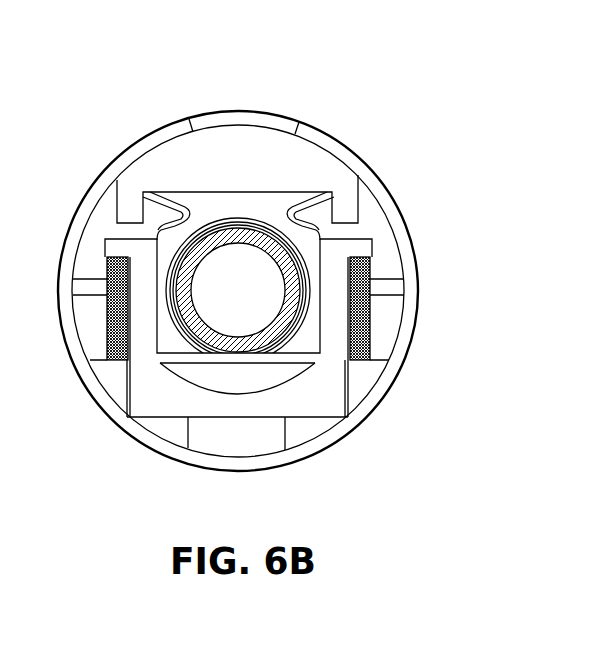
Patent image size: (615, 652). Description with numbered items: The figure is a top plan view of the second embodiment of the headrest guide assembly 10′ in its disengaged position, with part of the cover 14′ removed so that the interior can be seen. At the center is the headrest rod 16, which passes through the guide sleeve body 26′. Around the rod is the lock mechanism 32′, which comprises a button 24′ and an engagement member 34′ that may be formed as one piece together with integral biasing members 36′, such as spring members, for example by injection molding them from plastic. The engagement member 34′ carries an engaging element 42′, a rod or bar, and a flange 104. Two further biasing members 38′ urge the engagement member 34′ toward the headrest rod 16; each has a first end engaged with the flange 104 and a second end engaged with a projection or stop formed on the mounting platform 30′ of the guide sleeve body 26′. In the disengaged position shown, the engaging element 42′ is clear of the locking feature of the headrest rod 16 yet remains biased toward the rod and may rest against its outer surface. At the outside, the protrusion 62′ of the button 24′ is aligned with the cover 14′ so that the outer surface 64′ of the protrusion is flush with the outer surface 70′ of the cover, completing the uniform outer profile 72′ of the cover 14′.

The headrest guide assembly 10′ is at (354, 42).
The cover 14′ is at (88, 193).
The headrest rod 16 is at (170, 388).
The button 24′ is at (282, 169).
The guide sleeve body 26′ is at (188, 450).
The mounting platform 30′ is at (237, 433).
The lock mechanism 32′ is at (275, 441).
The engagement member 34′ is at (182, 312).
The biasing members 36′ is at (187, 213).
The biasing members 38′ is at (107, 320).
The engaging element 42′ is at (280, 361).
The protrusion 62′ is at (245, 108).
The outer surface 64′ is at (226, 93).
The outer surface 70′ is at (113, 130).
The uniform outer profile 72′ is at (172, 119).
The flange 104 is at (108, 252).